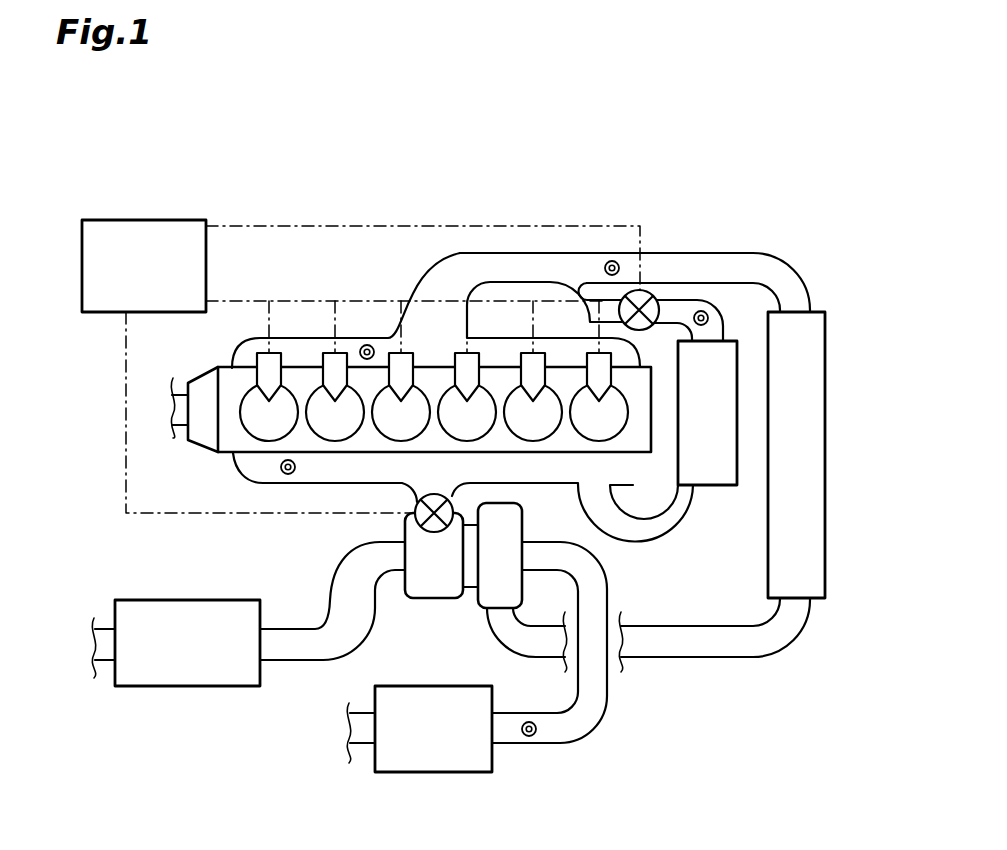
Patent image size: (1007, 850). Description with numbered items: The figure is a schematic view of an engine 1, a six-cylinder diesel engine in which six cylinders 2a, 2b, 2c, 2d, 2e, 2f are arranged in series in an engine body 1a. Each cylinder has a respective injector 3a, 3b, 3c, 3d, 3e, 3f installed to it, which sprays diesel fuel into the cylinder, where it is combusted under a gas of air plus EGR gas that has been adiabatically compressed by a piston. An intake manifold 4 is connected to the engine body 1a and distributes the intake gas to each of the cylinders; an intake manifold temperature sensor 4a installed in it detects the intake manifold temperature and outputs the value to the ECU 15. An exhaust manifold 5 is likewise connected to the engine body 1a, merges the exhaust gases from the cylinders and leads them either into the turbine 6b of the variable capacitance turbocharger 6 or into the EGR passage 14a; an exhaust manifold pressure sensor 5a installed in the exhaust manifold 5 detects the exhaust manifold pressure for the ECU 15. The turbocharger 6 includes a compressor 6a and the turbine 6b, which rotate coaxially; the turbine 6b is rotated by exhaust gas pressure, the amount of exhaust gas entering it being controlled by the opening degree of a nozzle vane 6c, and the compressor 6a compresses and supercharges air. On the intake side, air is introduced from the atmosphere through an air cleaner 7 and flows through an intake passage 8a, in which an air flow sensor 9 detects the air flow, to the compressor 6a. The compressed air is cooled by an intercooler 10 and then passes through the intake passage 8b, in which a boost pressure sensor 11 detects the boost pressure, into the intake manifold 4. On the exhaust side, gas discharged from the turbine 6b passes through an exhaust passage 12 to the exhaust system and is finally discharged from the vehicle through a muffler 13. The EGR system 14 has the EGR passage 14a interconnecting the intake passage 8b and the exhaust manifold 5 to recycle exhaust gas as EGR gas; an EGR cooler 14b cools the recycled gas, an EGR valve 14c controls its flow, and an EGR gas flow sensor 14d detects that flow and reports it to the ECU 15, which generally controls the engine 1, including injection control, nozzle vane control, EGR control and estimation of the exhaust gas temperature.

The engine 1 is at (411, 310).
The engine body 1a is at (226, 455).
The cylinder 2a is at (262, 442).
The cylinder 2b is at (343, 440).
The cylinder 2c is at (410, 440).
The cylinder 2d is at (476, 440).
The cylinder 2e is at (543, 440).
The cylinder 2f is at (620, 440).
The injector 3a is at (243, 364).
The injector 3b is at (320, 362).
The injector 3c is at (414, 360).
The injector 3d is at (481, 362).
The injector 3e is at (547, 360).
The injector 3f is at (613, 358).
The intake manifold 4 is at (450, 348).
The intake manifold temperature sensor 4a is at (367, 344).
The exhaust manifold 5 is at (335, 473).
The exhaust manifold pressure sensor 5a is at (287, 474).
The turbocharger 6 is at (472, 582).
The compressor 6a is at (523, 525).
The turbine 6b is at (428, 600).
The nozzle vane 6c is at (417, 503).
The air cleaner 7 is at (462, 773).
The intake passage 8a is at (600, 716).
The intake passage 8b is at (753, 252).
The air flow sensor 9 is at (529, 737).
The intercooler 10 is at (768, 572).
The boost pressure sensor 11 is at (612, 260).
The exhaust passage 12 is at (307, 662).
The muffler 13 is at (150, 688).
The EGR system 14 is at (689, 417).
The EGR passage 14a is at (657, 544).
The EGR cooler 14b is at (727, 487).
The EGR valve 14c is at (648, 286).
The EGR gas flow sensor 14d is at (703, 309).
The ECU 15 is at (170, 220).